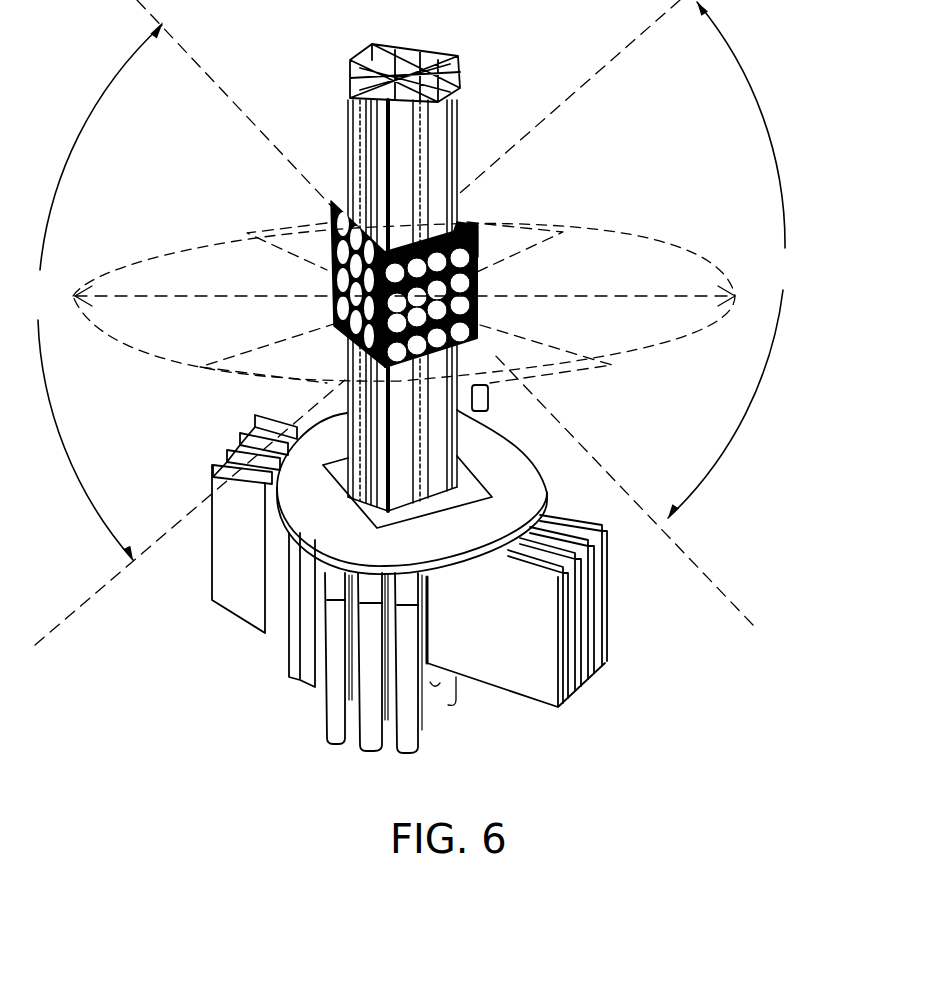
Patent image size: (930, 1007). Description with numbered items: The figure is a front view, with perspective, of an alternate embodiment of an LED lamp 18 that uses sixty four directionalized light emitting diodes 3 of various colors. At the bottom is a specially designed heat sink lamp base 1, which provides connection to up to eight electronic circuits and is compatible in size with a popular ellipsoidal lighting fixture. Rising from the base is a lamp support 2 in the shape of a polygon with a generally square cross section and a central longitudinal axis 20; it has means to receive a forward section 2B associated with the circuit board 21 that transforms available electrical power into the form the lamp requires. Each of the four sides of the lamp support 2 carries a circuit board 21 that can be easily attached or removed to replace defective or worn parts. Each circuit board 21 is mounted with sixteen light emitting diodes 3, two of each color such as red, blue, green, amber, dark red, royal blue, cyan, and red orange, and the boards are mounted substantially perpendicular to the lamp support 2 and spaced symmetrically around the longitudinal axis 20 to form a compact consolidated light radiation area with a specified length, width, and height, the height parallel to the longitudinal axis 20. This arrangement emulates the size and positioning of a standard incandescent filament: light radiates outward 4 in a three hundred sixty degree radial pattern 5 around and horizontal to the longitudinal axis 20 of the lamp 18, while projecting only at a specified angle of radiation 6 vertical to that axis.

The lamp base 1 is at (460, 643).
The lamp support 2 is at (442, 465).
The forward section 2B is at (377, 53).
The light emitting diodes 3 is at (352, 342).
The outward light radiation 4 is at (148, 297).
The 360 degree radial pattern 5 is at (157, 250).
The angle of radiation 6 is at (413, 322).
The LED lamp 18 is at (343, 500).
The central longitudinal axis 20 is at (430, 385).
The circuit board 21 is at (440, 200).